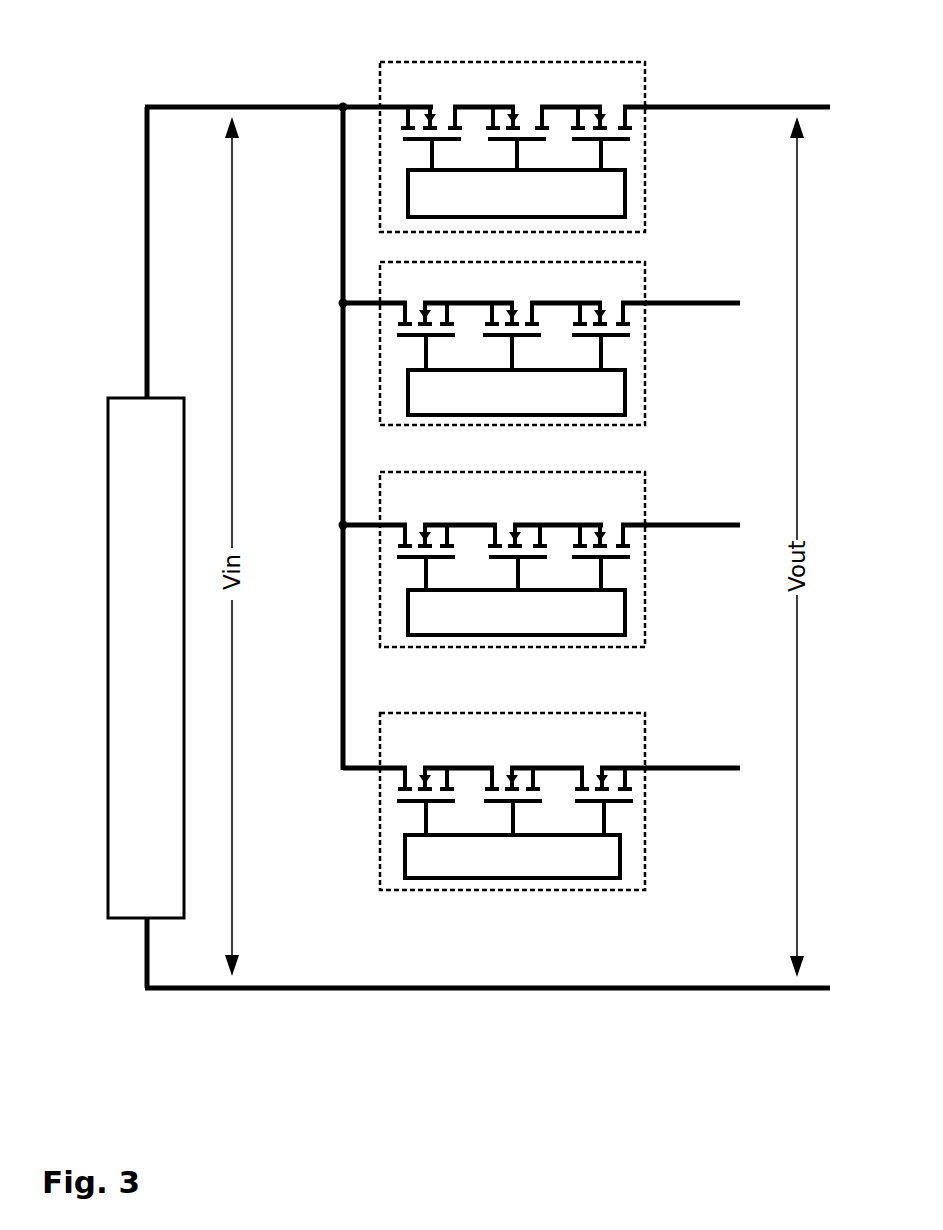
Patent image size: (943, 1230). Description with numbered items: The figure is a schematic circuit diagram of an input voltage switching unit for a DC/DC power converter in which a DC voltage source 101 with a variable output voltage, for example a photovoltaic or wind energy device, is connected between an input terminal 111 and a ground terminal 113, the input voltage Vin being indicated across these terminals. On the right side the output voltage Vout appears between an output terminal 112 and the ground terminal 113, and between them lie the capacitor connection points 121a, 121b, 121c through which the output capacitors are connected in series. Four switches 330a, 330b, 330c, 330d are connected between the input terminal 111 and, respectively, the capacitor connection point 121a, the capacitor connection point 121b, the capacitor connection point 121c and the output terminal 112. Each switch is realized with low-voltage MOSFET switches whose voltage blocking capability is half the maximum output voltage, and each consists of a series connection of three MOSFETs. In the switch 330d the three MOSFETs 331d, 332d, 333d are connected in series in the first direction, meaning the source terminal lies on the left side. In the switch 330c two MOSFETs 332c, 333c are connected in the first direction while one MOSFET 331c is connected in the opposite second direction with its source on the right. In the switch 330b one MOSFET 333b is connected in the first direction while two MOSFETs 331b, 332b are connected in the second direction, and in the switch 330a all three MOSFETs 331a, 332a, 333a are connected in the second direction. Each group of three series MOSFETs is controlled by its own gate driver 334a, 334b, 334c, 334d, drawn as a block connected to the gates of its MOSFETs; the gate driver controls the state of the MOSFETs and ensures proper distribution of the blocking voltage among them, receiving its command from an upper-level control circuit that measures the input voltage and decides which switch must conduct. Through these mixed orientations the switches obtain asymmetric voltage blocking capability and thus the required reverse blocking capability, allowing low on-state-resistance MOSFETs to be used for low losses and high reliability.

The DC voltage source 101 is at (146, 547).
The input terminal 111 is at (246, 421).
The output terminal 112 is at (737, 91).
The ground terminal 113 is at (487, 973).
The capacitor connection point 121a is at (693, 753).
The capacitor connection point 121b is at (693, 510).
The capacitor connection point 121c is at (693, 287).
The switch 330a is at (645, 717).
The switch 330b is at (645, 476).
The switch 330c is at (645, 266).
The switch 330d is at (645, 63).
The MOSFET 331a is at (426, 759).
The MOSFET 331b is at (426, 516).
The MOSFET 331c is at (426, 300).
The MOSFET 331d is at (431, 101).
The MOSFET 332a is at (513, 759).
The MOSFET 332b is at (518, 516).
The MOSFET 332c is at (516, 300).
The MOSFET 332d is at (517, 101).
The MOSFET 333a is at (605, 759).
The MOSFET 333b is at (604, 516).
The MOSFET 333c is at (605, 300).
The MOSFET 333d is at (601, 101).
The gate driver 334a is at (512, 856).
The gate driver 334b is at (516, 612).
The gate driver 334c is at (516, 392).
The gate driver 334d is at (516, 193).